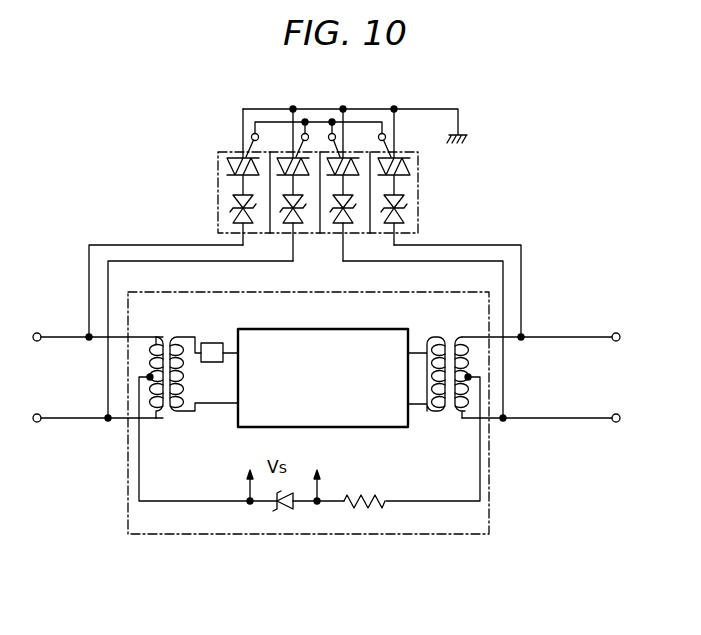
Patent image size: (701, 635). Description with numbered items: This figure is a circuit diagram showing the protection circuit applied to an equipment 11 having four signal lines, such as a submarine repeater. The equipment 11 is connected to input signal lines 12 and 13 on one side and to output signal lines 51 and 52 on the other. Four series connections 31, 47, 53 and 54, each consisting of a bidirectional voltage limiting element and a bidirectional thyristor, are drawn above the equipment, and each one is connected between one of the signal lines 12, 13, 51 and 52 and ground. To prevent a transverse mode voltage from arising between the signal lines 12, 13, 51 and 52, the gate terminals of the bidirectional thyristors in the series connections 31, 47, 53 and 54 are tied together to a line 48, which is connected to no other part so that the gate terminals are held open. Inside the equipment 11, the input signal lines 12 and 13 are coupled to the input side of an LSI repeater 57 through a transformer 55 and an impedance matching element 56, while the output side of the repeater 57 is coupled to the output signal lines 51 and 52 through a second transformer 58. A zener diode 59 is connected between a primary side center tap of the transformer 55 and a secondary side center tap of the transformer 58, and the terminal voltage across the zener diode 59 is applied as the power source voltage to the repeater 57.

The equipment 11 is at (487, 535).
The input signal line 12 is at (57, 336).
The input signal line 13 is at (64, 417).
The series connection 31 is at (223, 177).
The series connection 47 is at (307, 235).
The line 48 is at (360, 121).
The output signal line 51 is at (553, 337).
The output signal line 52 is at (549, 418).
The series connection 53 is at (420, 175).
The series connection 54 is at (361, 226).
The transformer 55 is at (168, 337).
The impedance matching element 56 is at (213, 342).
The LSI repeater 57 is at (388, 329).
The transformer 58 is at (452, 337).
The zener diode 59 is at (294, 505).